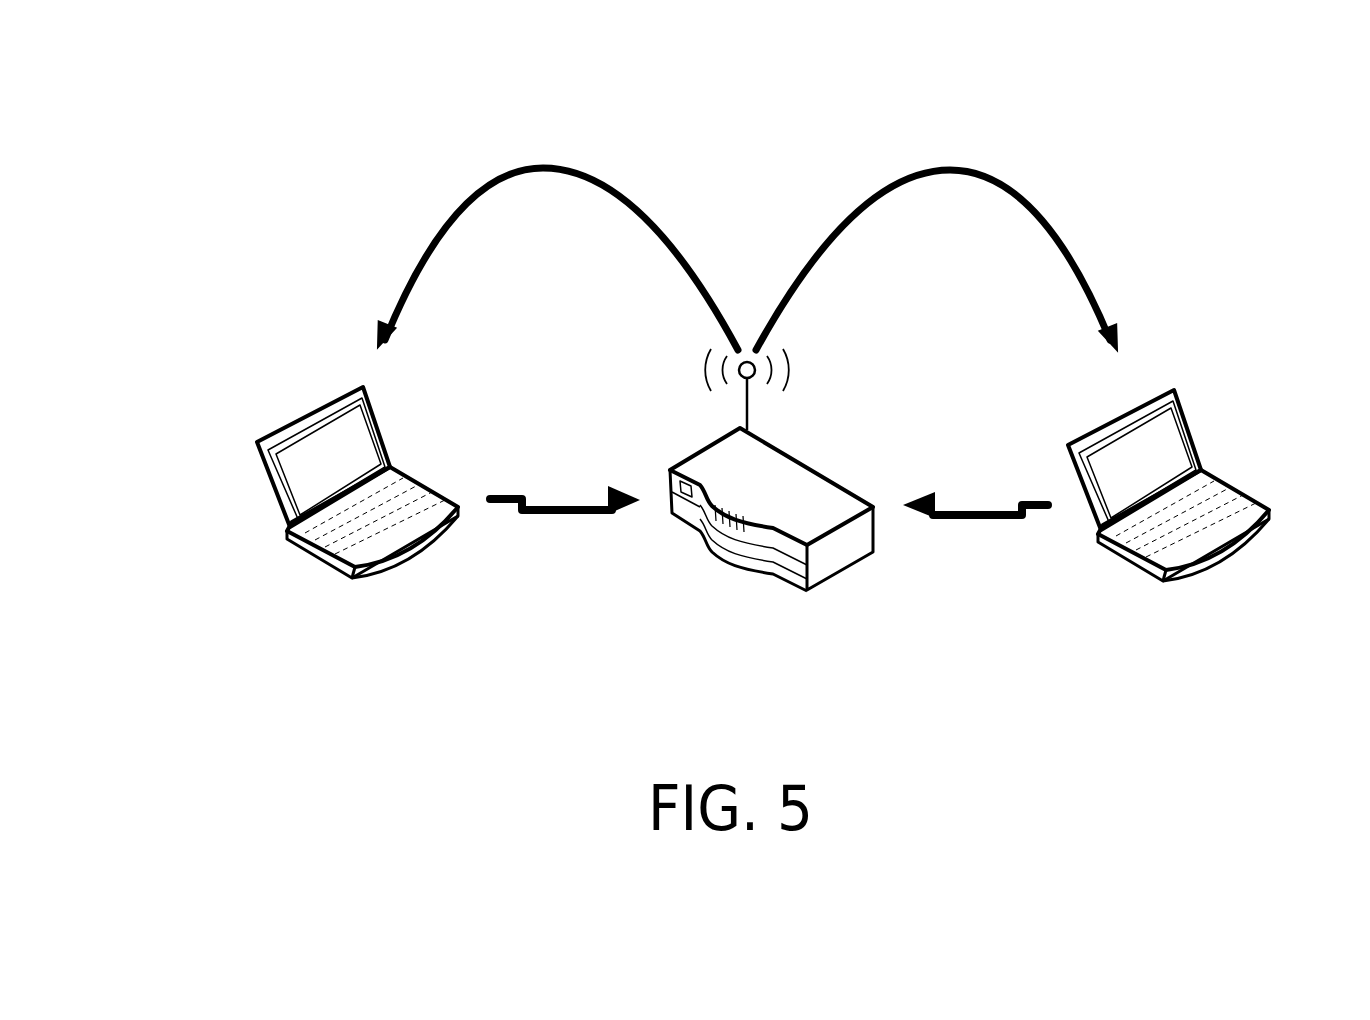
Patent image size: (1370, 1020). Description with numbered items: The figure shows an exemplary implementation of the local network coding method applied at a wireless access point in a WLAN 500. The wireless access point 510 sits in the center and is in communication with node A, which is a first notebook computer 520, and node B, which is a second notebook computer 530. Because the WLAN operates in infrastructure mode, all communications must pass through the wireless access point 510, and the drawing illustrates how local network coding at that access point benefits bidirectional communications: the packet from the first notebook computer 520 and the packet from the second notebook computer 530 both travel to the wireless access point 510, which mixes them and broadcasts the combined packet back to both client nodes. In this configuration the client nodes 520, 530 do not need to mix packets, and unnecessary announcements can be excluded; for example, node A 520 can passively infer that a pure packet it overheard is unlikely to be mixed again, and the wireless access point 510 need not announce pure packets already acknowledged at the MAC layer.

The WLAN 500 is at (318, 153).
The wireless access point 510 is at (795, 477).
The first notebook computer 520 is at (285, 543).
The second notebook computer 530 is at (1267, 522).